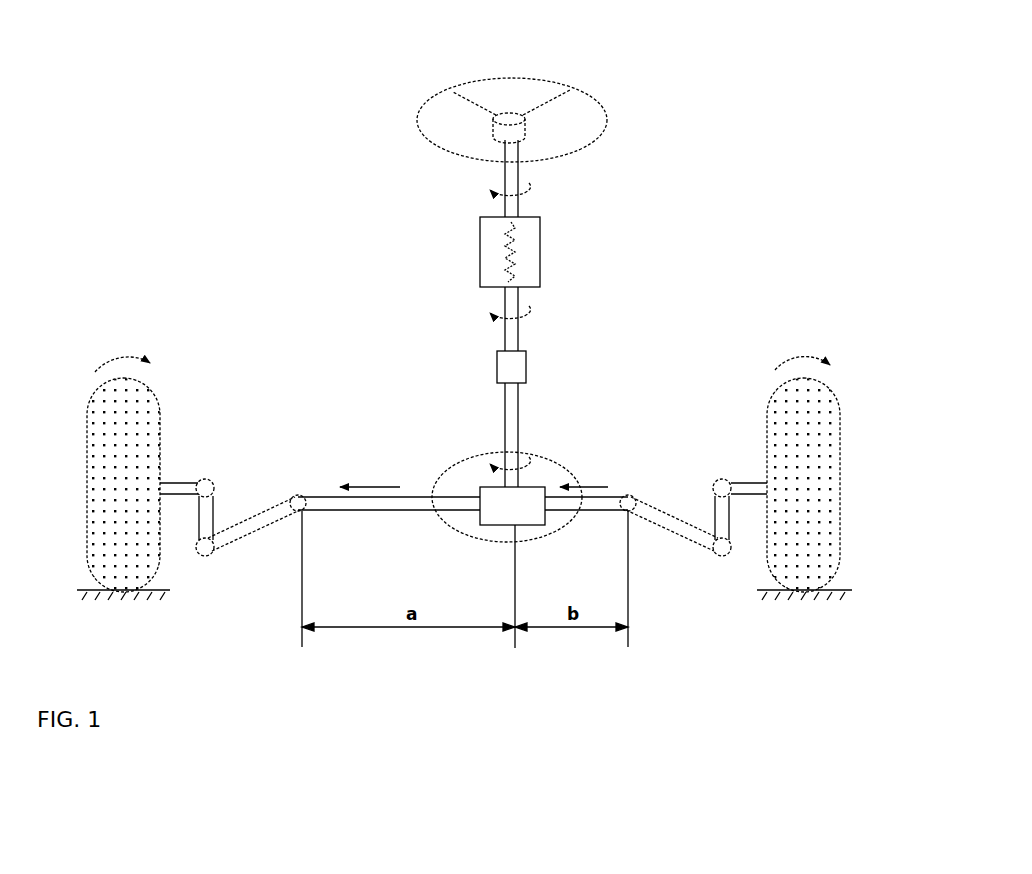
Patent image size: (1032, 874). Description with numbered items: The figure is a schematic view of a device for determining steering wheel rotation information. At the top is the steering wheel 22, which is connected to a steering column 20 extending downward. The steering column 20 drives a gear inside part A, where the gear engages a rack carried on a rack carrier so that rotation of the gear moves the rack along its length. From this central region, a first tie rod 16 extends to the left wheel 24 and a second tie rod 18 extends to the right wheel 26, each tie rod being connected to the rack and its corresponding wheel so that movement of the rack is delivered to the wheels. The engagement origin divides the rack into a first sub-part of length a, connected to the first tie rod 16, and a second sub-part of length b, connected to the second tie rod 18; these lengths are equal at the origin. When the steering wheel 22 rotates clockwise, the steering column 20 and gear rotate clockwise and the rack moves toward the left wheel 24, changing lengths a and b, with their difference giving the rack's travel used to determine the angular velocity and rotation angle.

The steering wheel 22 is at (587, 107).
The steering column 20 is at (520, 337).
The part A is at (532, 493).
The left wheel 24 is at (130, 423).
The right wheel 26 is at (827, 387).
The first tie rod 16 is at (242, 537).
The second tie rod 18 is at (678, 535).